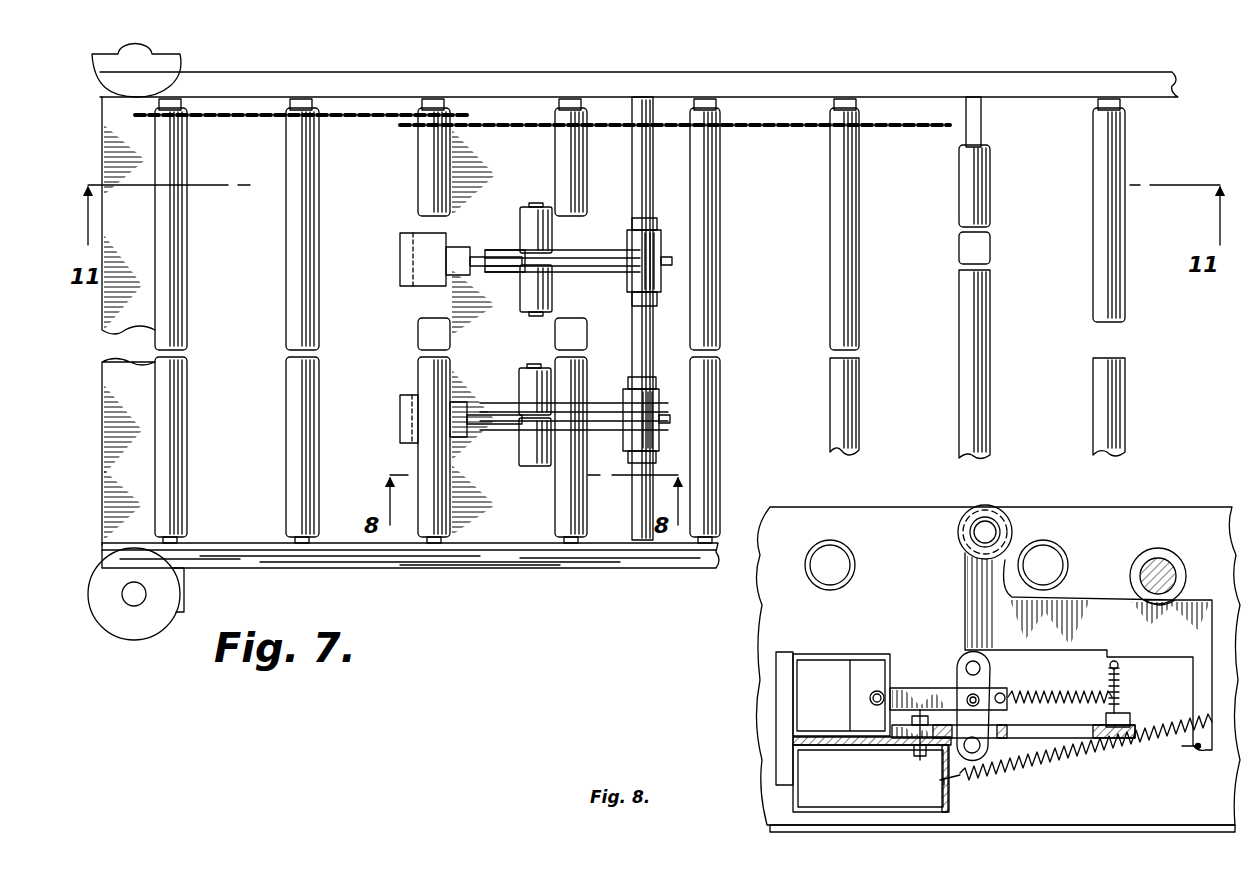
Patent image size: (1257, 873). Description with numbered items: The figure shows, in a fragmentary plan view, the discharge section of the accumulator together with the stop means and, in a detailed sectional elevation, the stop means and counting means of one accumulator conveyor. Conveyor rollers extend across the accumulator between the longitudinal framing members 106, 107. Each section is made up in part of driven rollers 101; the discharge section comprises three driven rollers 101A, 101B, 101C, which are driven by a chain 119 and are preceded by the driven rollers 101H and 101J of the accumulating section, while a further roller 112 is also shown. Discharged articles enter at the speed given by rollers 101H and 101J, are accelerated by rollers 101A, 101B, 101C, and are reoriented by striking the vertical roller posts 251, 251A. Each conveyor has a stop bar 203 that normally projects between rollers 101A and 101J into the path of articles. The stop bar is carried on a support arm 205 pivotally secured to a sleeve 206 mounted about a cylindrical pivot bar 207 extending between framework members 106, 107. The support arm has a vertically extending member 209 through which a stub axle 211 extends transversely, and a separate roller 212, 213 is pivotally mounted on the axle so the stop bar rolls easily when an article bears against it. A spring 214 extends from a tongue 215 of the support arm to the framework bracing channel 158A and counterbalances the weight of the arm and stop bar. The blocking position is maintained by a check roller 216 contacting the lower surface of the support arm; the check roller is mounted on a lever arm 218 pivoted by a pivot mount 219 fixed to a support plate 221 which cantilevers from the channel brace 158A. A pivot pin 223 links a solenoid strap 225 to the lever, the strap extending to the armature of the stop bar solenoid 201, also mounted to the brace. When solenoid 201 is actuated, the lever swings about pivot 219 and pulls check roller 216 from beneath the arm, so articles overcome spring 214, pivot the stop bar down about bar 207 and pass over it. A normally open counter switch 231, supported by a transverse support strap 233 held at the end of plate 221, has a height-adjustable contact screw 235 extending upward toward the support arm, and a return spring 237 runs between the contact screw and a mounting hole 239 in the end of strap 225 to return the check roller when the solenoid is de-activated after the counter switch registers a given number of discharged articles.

In FIG. 7, the longitudinal framing member 107 is at (720, 82).
In FIG. 8, the longitudinal framing member 107 is at (774, 686).
In FIG. 7, the vertical roller post 251 is at (182, 86).
In FIG. 7, the chain 119 is at (357, 113).
In FIG. 7, the longitudinal framing member 106 is at (598, 556).
In FIG. 7, the vertical roller post 251A is at (165, 598).
In FIG. 7, the driven roller 101C is at (189, 144).
In FIG. 7, the driven roller 101B is at (291, 258).
In FIG. 7, the driven roller 101A is at (416, 146).
In FIG. 8, the driven roller 101A is at (814, 585).
In FIG. 7, the driven roller 101J is at (558, 108).
In FIG. 8, the driven roller 101J is at (1026, 548).
In FIG. 7, the cylindrical pivot bar 207 is at (633, 158).
In FIG. 8, the cylindrical pivot bar 207 is at (1150, 575).
In FIG. 7, the roller 112 is at (724, 148).
In FIG. 7, the driven roller 101H is at (990, 150).
In FIG. 7, the driven roller 101 is at (1104, 150).
In FIG. 7, the stop bar solenoid 201 is at (400, 258).
In FIG. 8, the stop bar solenoid 201 is at (830, 665).
In FIG. 7, the solenoid strap 225 is at (480, 246).
In FIG. 8, the solenoid strap 225 is at (930, 694).
In FIG. 7, the support arm 205 is at (606, 250).
In FIG. 8, the support arm 205 is at (1080, 625).
In FIG. 7, the roller 213 is at (553, 232).
In FIG. 7, the roller 212 is at (553, 296).
In FIG. 8, the roller 212 is at (975, 506).
In FIG. 7, the sleeve 206 is at (640, 280).
In FIG. 8, the sleeve 206 is at (1165, 562).
In FIG. 7, the framework bracing channel 158A is at (440, 297).
In FIG. 8, the framework bracing channel 158A is at (830, 768).
In FIG. 8, the stop bar 203 is at (993, 508).
In FIG. 8, the stub axle 211 is at (982, 530).
In FIG. 8, the vertically extending member 209 is at (980, 575).
In FIG. 8, the check roller 216 is at (958, 657).
In FIG. 8, the lever arm 218 is at (982, 704).
In FIG. 8, the mounting hole 239 is at (1003, 692).
In FIG. 8, the return spring 237 is at (1052, 698).
In FIG. 8, the contact screw 235 is at (1122, 682).
In FIG. 8, the counter switch 231 is at (1130, 716).
In FIG. 8, the transverse support strap 233 is at (1137, 742).
In FIG. 8, the support plate 221 is at (1060, 733).
In FIG. 8, the pivot pin 223 is at (936, 745).
In FIG. 8, the spring 214 is at (1115, 768).
In FIG. 8, the tongue 215 is at (1200, 752).
In FIG. 8, the pivot mount 219 is at (978, 768).